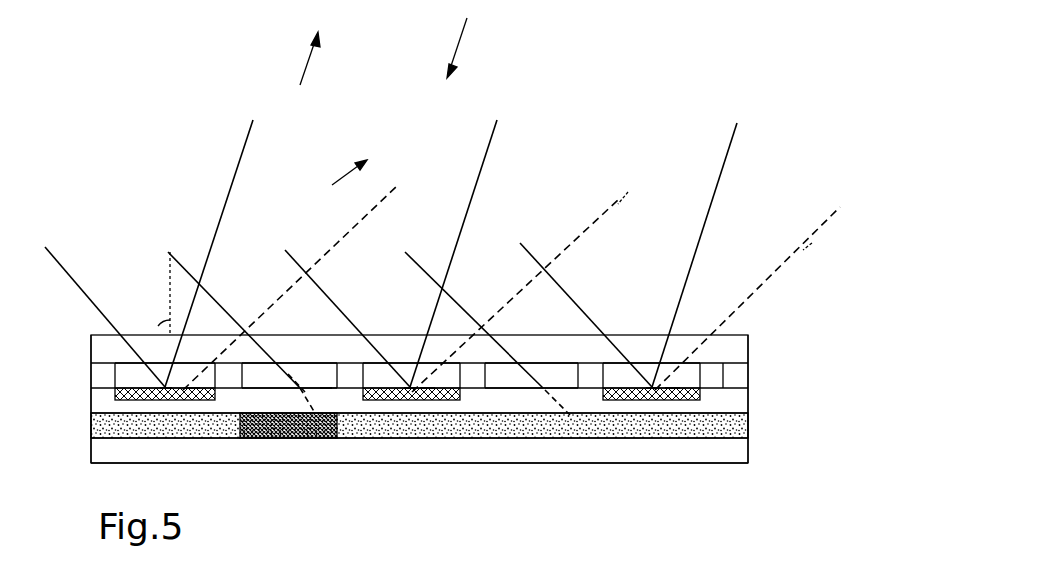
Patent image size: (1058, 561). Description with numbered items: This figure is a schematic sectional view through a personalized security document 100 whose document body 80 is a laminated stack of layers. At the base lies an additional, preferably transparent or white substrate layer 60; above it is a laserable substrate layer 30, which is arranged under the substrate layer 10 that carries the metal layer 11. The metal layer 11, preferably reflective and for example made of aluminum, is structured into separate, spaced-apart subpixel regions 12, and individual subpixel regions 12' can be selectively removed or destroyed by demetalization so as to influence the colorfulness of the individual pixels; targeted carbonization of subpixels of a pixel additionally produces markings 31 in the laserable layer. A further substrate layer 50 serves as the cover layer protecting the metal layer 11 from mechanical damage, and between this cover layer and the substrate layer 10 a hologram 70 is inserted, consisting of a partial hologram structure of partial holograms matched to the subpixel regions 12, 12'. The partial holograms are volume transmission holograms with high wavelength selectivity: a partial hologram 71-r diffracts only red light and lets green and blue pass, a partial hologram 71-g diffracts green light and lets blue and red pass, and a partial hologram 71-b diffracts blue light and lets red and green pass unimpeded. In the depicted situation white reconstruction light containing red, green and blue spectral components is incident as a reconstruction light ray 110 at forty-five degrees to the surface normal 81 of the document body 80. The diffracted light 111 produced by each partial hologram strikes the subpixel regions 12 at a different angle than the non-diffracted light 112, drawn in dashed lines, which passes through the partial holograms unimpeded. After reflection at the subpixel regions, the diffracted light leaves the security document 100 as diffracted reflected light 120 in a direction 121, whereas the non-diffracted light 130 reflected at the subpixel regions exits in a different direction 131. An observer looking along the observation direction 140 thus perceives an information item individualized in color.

The substrate layer 10 is at (750, 400).
The metal layer 11 is at (786, 393).
The subpixel regions 12 is at (401, 450).
The subpixel regions 12' is at (410, 451).
The laserable substrate layer 30 is at (747, 427).
The markings 31 is at (255, 428).
The further substrate layer 50 is at (750, 348).
The additional substrate layer 60 is at (748, 463).
The hologram 70 is at (750, 378).
The partial hologram 71-r is at (560, 380).
The partial hologram 71-g is at (340, 395).
The partial hologram 71-b is at (452, 385).
The document body 80 is at (91, 455).
The surface normal 81 is at (168, 282).
The security document 100 is at (773, 321).
The reconstruction light ray 110 is at (65, 263).
The diffracted light 111 is at (160, 383).
The non-diffracted light 112 is at (190, 383).
The diffracted reflected light 120 is at (256, 124).
The direction 121 is at (310, 70).
The non-diffracted light 130 is at (397, 187).
The direction 131 is at (338, 167).
The observation direction 140 is at (467, 30).